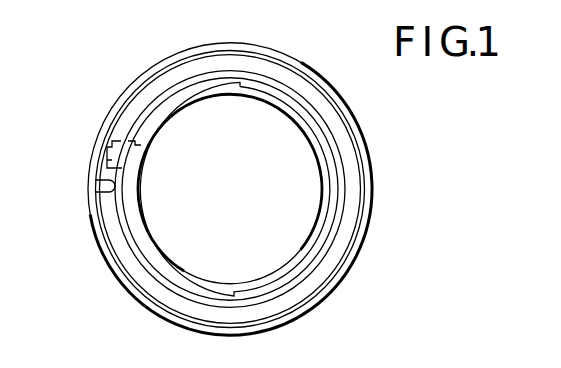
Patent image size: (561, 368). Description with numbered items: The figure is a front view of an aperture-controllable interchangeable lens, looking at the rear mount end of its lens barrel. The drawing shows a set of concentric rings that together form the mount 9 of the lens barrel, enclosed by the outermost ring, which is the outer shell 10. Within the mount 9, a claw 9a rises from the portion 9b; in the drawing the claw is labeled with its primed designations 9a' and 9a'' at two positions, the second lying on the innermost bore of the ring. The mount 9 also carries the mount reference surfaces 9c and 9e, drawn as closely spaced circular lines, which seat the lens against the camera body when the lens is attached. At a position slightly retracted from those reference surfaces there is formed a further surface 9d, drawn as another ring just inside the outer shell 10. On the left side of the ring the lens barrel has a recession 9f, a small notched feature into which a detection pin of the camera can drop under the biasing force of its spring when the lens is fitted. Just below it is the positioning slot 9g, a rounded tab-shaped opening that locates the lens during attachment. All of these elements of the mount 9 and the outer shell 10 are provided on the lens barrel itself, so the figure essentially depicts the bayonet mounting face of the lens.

The mount 9 is at (350, 222).
The claw 9a is at (197, 189).
The inner ring portion surface 9a' is at (133, 286).
The inner bore surface 9a'' is at (288, 189).
The portion 9b is at (253, 88).
The mount reference surface 9c is at (149, 124).
The surface 9d is at (149, 105).
The mount reference surface 9e is at (162, 72).
The recession 9f is at (113, 149).
The positioning slot 9g is at (108, 190).
The outer shell 10 is at (203, 45).